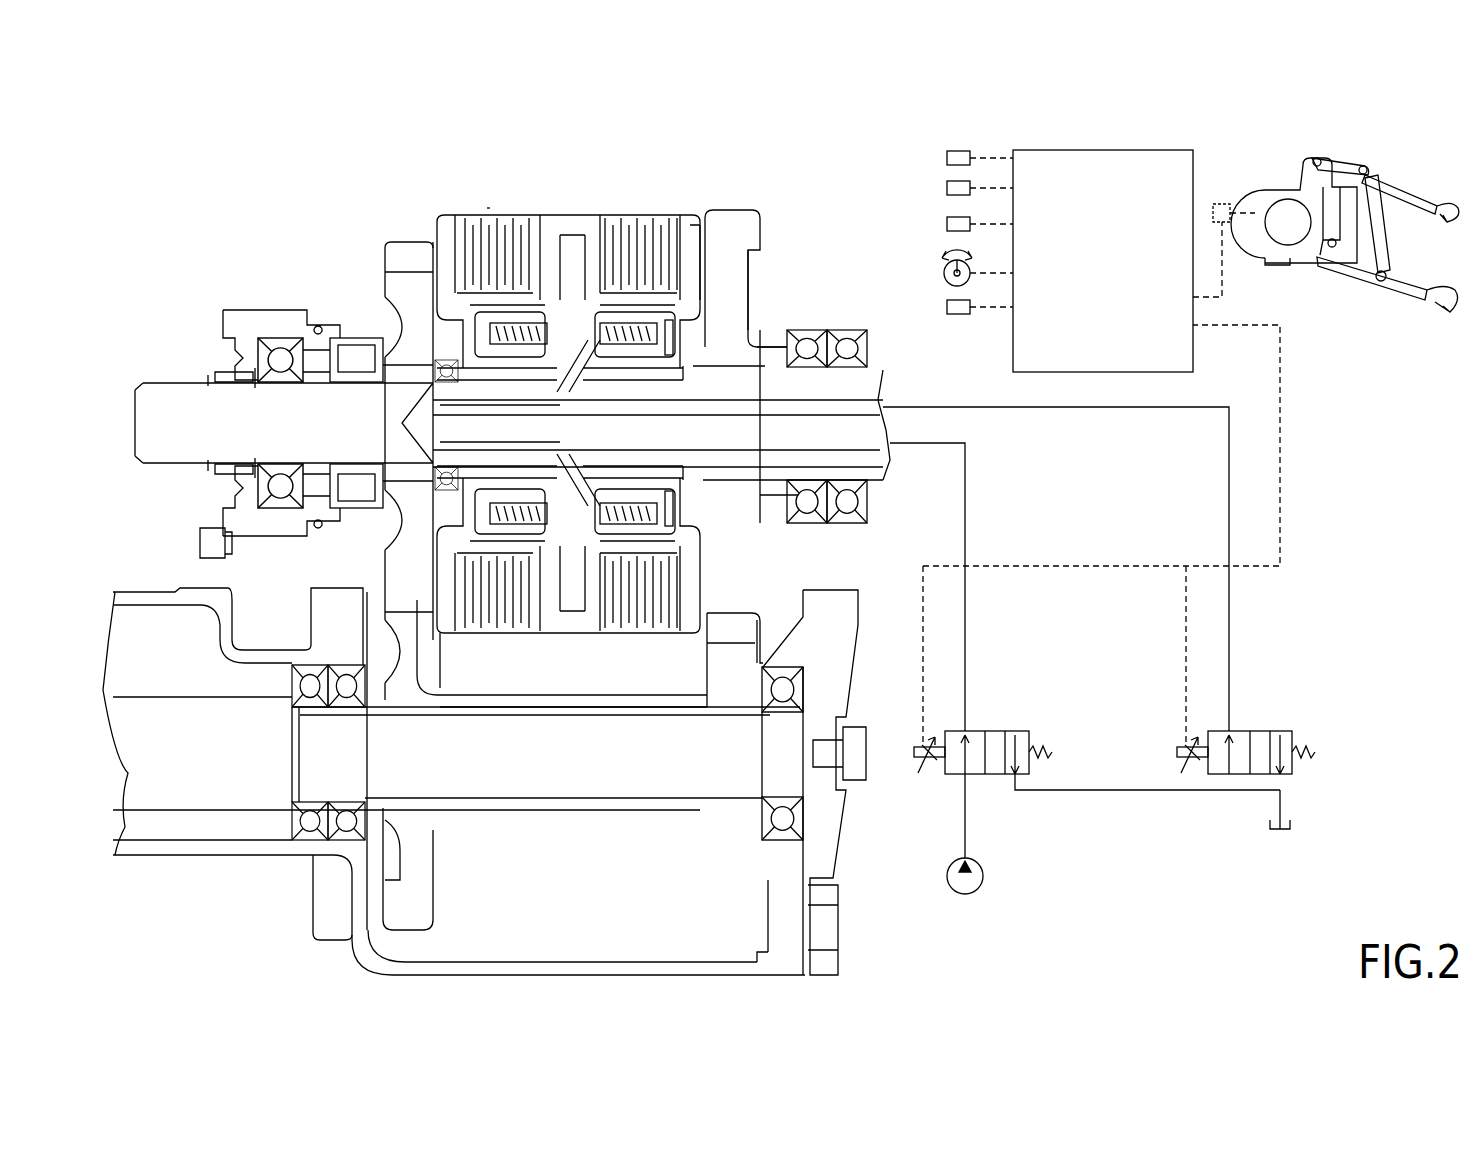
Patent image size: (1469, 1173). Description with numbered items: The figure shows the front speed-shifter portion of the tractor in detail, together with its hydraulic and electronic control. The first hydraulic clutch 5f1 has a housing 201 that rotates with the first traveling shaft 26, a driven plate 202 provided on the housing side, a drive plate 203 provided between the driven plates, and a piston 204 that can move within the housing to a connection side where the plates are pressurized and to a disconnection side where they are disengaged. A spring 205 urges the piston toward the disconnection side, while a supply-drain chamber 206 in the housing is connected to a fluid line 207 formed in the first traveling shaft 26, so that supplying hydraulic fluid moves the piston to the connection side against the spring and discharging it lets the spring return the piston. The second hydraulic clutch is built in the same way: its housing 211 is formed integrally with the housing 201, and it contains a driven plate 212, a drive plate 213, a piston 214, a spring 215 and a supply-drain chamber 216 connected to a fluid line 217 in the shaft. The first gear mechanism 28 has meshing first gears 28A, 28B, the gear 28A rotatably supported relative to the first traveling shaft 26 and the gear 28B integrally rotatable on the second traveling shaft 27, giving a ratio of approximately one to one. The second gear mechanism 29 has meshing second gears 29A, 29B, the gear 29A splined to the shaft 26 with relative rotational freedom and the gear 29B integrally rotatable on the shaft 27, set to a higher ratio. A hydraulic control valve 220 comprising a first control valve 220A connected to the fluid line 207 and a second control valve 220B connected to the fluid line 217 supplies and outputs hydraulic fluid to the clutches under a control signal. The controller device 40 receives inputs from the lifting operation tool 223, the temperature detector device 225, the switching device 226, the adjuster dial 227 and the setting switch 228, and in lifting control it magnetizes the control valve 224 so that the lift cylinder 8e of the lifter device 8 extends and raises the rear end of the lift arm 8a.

The first hydraulic clutch 5f1 is at (491, 196).
The housing 201 is at (532, 231).
The driven plate 202 is at (523, 215).
The drive plate 203 is at (525, 272).
The piston 204 is at (592, 262).
The spring 205 is at (480, 345).
The supply-drain chamber 206 is at (478, 300).
The housing 211 is at (702, 225).
The second gear mechanism 29 is at (746, 203).
The second gear 29A is at (748, 245).
The fluid line 207 is at (785, 445).
The first gear mechanism 28 is at (369, 292).
The first gear 28A is at (378, 297).
The first gear 28B is at (402, 892).
The second gear 29B is at (747, 873).
The first traveling shaft 26 is at (877, 464).
The second traveling shaft 27 is at (535, 775).
The fluid line 217 is at (860, 407).
The supply-drain chamber 216 is at (655, 500).
The spring 215 is at (665, 518).
The piston 214 is at (654, 696).
The drive plate 213 is at (658, 630).
The driven plate 212 is at (680, 630).
The controller device 40 is at (1135, 150).
The lifting operation tool 223 is at (945, 158).
The control valve 224 is at (1220, 204).
The temperature detector device 225 is at (945, 188).
The switching device 226 is at (945, 224).
The adjuster dial 227 is at (945, 273).
The setting switch 228 is at (945, 307).
The lifter device 8 is at (1345, 196).
The lift arm 8a is at (1340, 165).
The lift cylinder 8e is at (1333, 202).
The hydraulic control valve 220 is at (1114, 577).
The first control valve 220A is at (1018, 731).
The second control valve 220B is at (1283, 731).